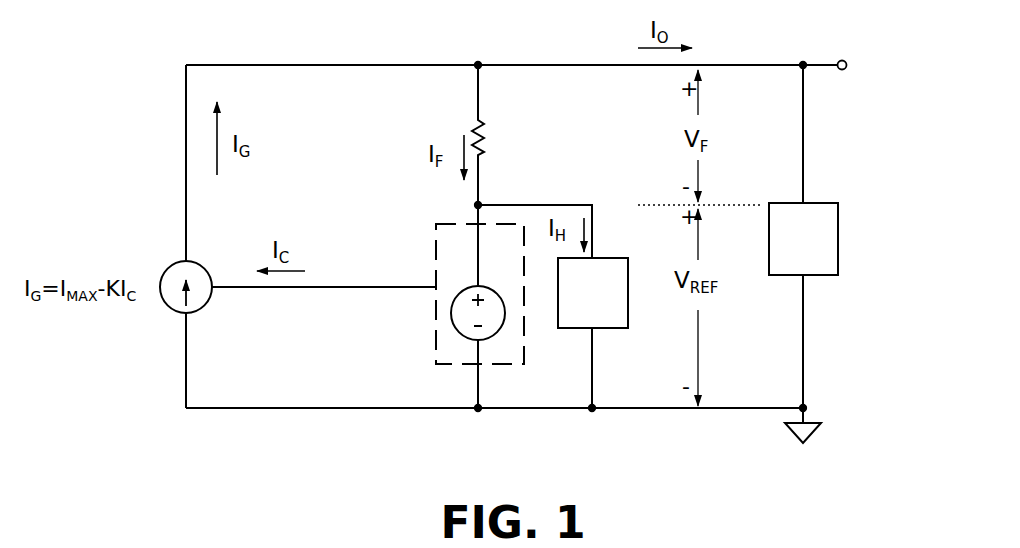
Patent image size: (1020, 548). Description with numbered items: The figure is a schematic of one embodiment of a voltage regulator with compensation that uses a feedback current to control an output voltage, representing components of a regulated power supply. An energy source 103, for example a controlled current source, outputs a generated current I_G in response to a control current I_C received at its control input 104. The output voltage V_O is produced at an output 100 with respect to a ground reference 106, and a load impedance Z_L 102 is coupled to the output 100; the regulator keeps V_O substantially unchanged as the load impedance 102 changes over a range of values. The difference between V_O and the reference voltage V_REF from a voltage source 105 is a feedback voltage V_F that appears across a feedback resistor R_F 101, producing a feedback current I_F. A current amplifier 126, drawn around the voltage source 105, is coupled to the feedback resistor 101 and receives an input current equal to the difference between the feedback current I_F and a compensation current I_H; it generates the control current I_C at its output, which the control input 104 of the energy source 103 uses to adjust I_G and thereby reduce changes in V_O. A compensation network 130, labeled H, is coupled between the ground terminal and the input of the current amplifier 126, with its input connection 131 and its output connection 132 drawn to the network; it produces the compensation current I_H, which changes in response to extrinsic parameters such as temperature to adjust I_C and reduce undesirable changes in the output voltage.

The output 100 is at (830, 54).
The feedback resistor 101 is at (466, 118).
The load impedance 102 is at (830, 197).
The energy source 103 is at (175, 256).
The control input 104 is at (222, 297).
The voltage source 105 is at (449, 314).
The ground reference 106 is at (812, 397).
The current amplifier 126 is at (430, 246).
The compensation network 130 is at (628, 310).
The input of block H 131 is at (598, 224).
The output of block H 132 is at (596, 366).